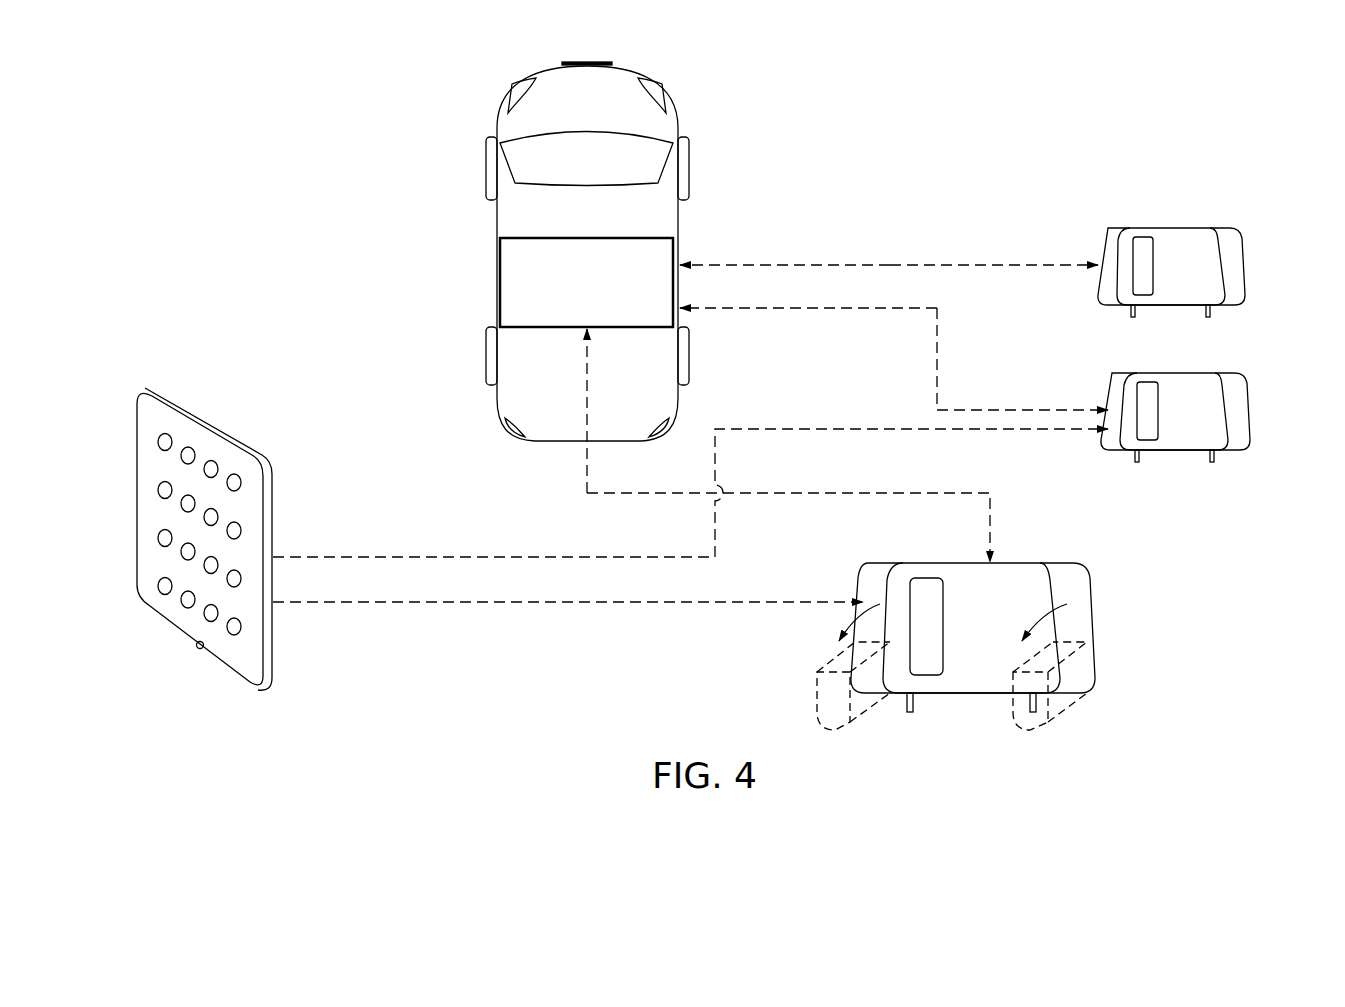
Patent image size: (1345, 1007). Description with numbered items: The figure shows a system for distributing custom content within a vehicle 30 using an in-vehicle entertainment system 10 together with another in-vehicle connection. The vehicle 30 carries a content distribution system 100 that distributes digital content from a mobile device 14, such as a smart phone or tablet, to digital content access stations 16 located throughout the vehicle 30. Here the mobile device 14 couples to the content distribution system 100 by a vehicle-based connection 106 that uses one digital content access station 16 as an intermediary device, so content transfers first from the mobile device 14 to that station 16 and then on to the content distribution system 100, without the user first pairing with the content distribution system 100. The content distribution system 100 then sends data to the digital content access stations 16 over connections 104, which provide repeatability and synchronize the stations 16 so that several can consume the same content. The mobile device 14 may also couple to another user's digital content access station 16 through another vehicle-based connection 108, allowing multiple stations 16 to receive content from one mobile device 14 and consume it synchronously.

The in-vehicle entertainment system 10 is at (823, 157).
The vehicle 30 is at (688, 125).
The content distribution system 100 is at (682, 247).
The mobile device 14 is at (273, 650).
The digital content access station 16 is at (1258, 240).
The connections 104 is at (860, 265).
The vehicle-based connection 106 is at (573, 606).
The vehicle-based connection 108 is at (440, 557).